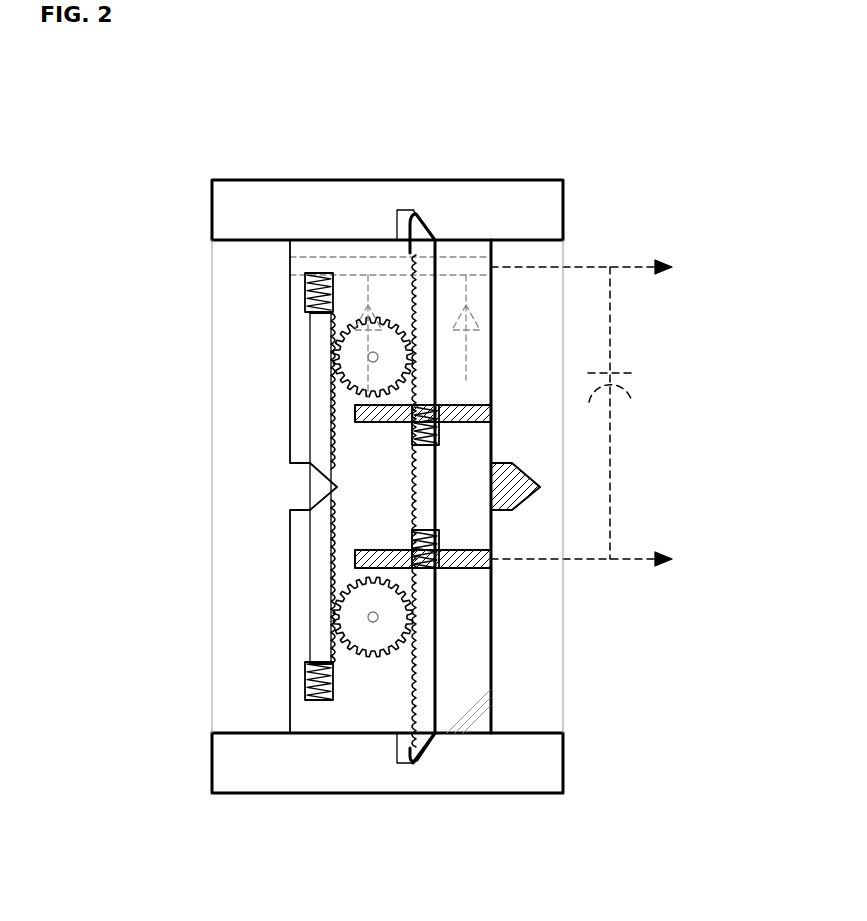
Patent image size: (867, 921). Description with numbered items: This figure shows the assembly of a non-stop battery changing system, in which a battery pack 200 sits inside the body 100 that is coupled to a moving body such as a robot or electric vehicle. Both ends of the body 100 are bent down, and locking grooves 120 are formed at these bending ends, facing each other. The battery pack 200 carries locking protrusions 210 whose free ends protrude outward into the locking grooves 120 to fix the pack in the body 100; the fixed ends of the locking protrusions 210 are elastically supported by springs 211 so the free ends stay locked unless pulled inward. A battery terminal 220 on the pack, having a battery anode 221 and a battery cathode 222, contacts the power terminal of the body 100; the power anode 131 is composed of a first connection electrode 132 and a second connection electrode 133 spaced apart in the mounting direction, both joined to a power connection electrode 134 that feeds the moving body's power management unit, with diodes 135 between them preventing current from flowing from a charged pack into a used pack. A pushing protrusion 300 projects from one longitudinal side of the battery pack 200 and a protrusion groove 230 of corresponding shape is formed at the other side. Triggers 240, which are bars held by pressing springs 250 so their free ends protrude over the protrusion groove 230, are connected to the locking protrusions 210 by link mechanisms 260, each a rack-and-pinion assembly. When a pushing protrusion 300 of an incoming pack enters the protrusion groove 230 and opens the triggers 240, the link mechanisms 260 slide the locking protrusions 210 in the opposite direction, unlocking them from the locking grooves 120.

The body 100 is at (512, 795).
The locking groove 120 is at (403, 216).
The power anode 131 is at (337, 354).
The first connection electrode 132 is at (450, 413).
The second connection electrode 133 is at (362, 313).
The power connection electrode 134 is at (392, 382).
The diode 135 is at (353, 345).
The battery pack 200 is at (291, 694).
The locking protrusion 210 is at (432, 293).
The spring 211 is at (425, 440).
The battery terminal 220 is at (272, 465).
The battery anode 221 is at (370, 412).
The battery cathode 222 is at (376, 550).
The protrusion groove 230 is at (299, 478).
The trigger 240 is at (320, 353).
The pressing spring 250 is at (323, 285).
The link mechanism 260 is at (330, 312).
The pushing protrusion 300 is at (508, 496).